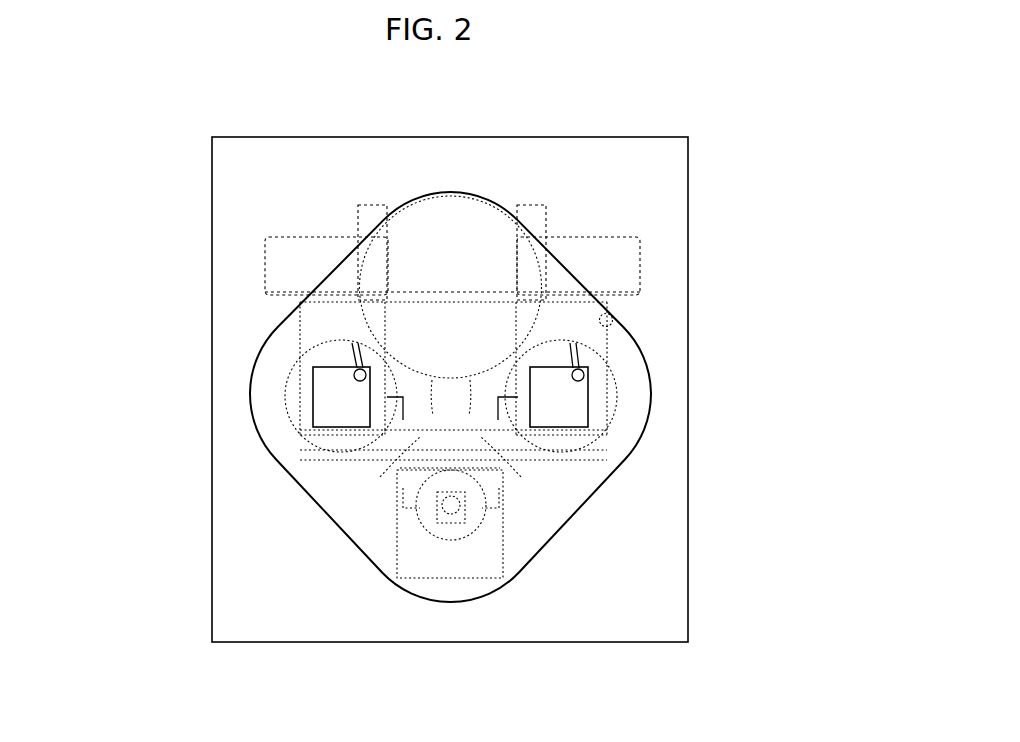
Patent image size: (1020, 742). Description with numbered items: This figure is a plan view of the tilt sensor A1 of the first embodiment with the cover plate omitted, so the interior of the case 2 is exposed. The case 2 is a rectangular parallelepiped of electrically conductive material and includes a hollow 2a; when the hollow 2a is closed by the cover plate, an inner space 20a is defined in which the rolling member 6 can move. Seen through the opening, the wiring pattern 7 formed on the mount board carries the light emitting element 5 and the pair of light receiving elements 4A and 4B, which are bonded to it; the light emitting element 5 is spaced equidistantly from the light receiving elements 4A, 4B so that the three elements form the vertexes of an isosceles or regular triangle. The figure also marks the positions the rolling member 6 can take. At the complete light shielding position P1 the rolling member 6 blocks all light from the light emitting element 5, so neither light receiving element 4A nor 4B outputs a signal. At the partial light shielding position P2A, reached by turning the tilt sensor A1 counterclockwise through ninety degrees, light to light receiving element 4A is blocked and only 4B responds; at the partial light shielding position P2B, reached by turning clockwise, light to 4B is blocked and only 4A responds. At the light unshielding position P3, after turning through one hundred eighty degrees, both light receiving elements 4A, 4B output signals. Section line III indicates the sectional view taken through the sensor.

The case 2 is at (672, 178).
The hollow 2a is at (612, 321).
The light receiving element 4A is at (337, 380).
The light receiving element 4B is at (563, 380).
The light emitting element 5 is at (441, 528).
The rolling member 6 is at (467, 590).
The wiring pattern 7 is at (643, 267).
The inner space 20a is at (353, 488).
The complete light shielding position P1 is at (403, 593).
The partial light shielding position P2A is at (268, 462).
The partial light shielding position P2B is at (643, 448).
The light unshielding position P3 is at (447, 185).
The tilt sensor A1 is at (197, 322).
The section line III is at (183, 398).